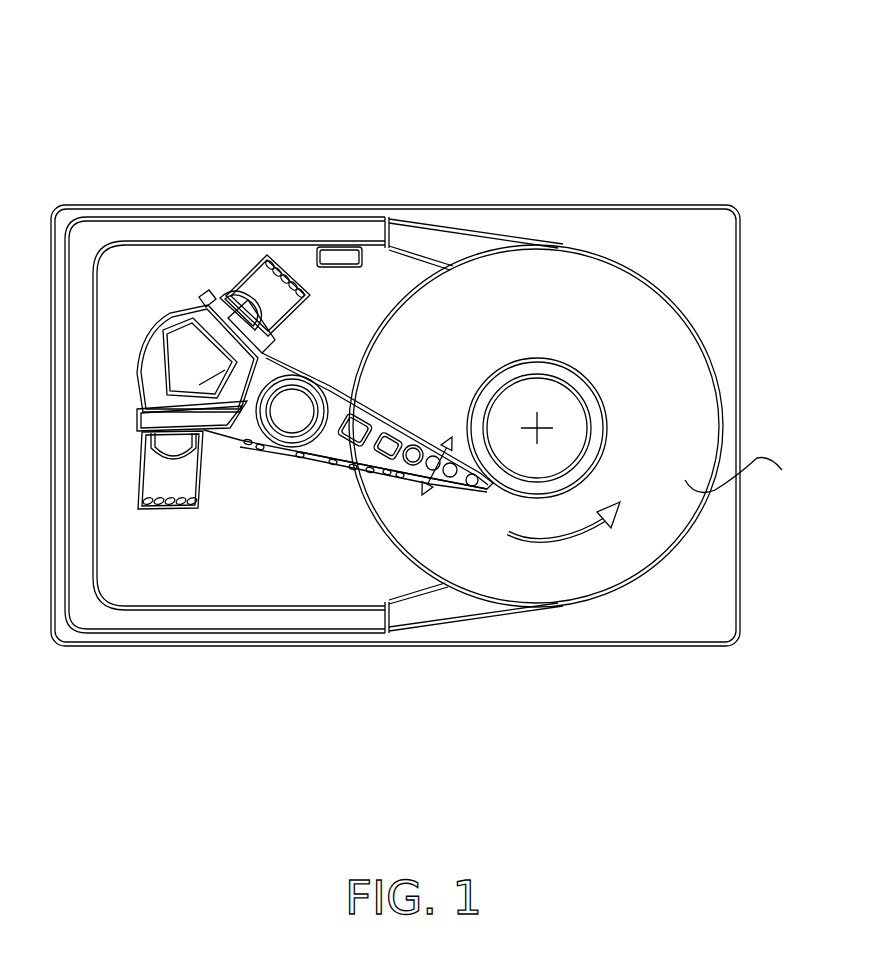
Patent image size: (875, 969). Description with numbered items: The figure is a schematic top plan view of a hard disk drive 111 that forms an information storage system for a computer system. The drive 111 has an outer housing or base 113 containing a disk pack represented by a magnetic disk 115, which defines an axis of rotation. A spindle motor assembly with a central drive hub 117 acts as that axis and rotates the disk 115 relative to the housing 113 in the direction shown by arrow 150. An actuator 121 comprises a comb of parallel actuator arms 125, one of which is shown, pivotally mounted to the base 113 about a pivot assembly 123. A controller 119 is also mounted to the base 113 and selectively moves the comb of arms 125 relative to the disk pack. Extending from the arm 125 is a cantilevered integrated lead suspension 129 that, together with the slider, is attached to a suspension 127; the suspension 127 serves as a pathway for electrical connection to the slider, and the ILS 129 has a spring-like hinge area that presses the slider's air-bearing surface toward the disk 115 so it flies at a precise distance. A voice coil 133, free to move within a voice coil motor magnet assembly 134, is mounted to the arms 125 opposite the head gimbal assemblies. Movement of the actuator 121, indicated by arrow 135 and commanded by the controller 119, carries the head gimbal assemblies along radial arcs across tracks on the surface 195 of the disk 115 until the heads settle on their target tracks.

The hard disk drive 111 is at (737, 103).
The housing 113 is at (598, 209).
The magnetic disk 115 is at (638, 277).
The central drive hub 117 is at (574, 369).
The controller 119 is at (343, 268).
The actuator 121 is at (205, 532).
The pivot assembly 123 is at (260, 447).
The actuator arm 125 is at (347, 383).
The suspension 127 is at (393, 418).
The integrated lead suspension 129 is at (470, 478).
The voice coil 133 is at (168, 322).
The voice coil motor magnet assembly 134 is at (252, 287).
The arrow indicating actuator movement 135 is at (413, 491).
The arrow indicating disk rotation direction 150 is at (550, 545).
The disk surface 195 is at (752, 481).